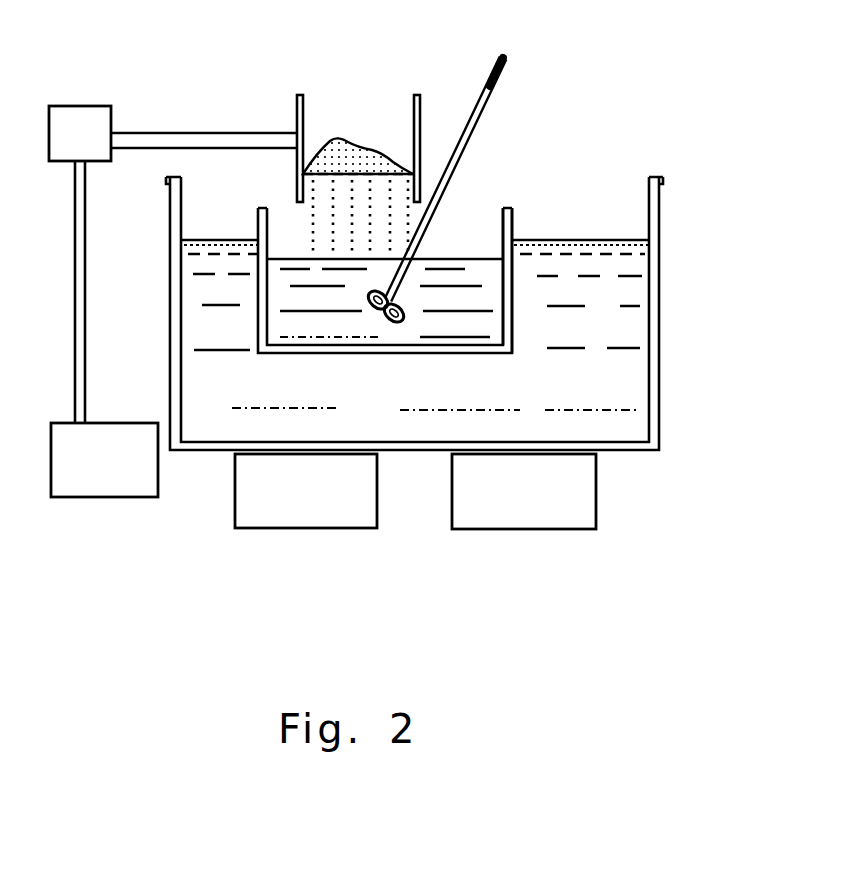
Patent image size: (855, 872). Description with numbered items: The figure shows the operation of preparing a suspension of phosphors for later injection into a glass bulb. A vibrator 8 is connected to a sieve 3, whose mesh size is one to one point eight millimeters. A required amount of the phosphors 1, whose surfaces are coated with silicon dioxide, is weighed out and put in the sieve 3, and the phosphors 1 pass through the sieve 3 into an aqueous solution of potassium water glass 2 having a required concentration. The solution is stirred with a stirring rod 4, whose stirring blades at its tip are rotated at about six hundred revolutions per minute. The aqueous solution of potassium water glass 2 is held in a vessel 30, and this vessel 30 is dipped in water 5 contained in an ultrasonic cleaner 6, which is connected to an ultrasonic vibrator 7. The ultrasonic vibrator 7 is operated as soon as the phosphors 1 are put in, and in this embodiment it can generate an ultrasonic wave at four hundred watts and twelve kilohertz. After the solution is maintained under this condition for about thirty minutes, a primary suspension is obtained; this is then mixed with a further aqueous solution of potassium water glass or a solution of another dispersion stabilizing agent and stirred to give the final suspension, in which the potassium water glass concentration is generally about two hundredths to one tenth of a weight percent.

The phosphors 1 is at (353, 147).
The aqueous solution of potassium water glass 2 is at (495, 322).
The sieve 3 is at (297, 116).
The stirring rod 4 is at (493, 90).
The water 5 is at (633, 400).
The ultrasonic cleaner 6 is at (653, 363).
The ultrasonic vibrator 7 is at (582, 488).
The vibrator 8 is at (86, 117).
The vessel 30 is at (513, 220).